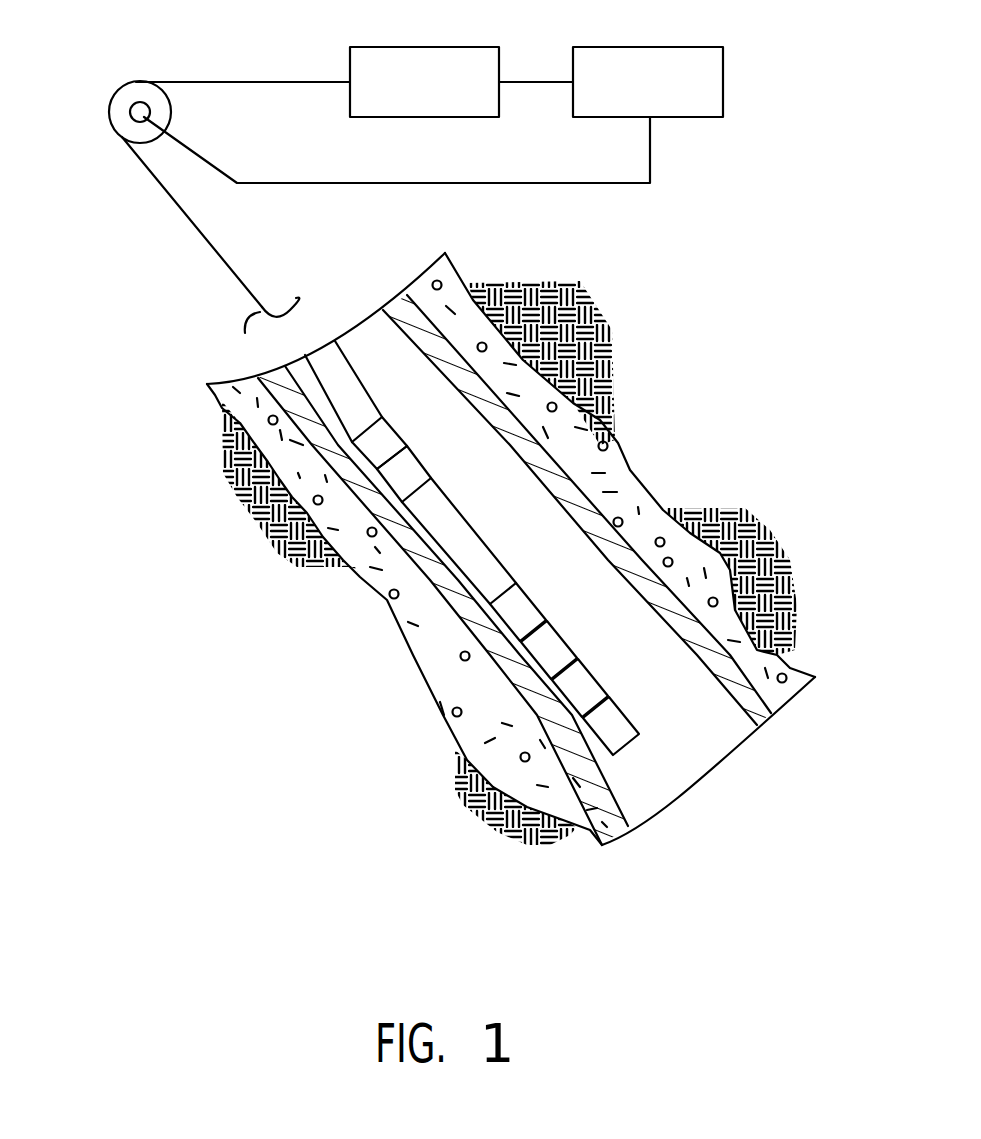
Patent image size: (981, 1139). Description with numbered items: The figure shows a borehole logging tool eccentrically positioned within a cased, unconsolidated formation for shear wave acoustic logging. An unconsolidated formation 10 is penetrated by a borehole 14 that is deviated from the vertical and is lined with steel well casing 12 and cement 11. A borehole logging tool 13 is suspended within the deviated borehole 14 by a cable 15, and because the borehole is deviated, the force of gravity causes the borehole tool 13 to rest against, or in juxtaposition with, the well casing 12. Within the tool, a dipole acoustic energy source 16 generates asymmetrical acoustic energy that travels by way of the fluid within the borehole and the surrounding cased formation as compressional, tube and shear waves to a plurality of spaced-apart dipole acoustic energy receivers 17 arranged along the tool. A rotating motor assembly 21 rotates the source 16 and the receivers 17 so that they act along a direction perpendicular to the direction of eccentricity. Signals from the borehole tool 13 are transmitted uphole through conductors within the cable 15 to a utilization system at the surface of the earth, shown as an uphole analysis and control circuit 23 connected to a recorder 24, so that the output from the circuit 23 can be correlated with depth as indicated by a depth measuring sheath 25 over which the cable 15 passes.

The unconsolidated formation 10 is at (834, 509).
The cement 11 is at (608, 455).
The well casing 12 is at (463, 388).
The borehole logging tool 13 is at (360, 396).
The borehole 14 is at (552, 549).
The cable 15 is at (230, 260).
The dipole acoustic energy source 16 is at (420, 468).
The dipole acoustic energy receivers 17 is at (544, 606).
The rotating motor assembly 21 is at (379, 443).
The uphole analysis and control circuit 23 is at (441, 98).
The recorder 24 is at (667, 98).
The depth measuring sheath 25 is at (122, 82).